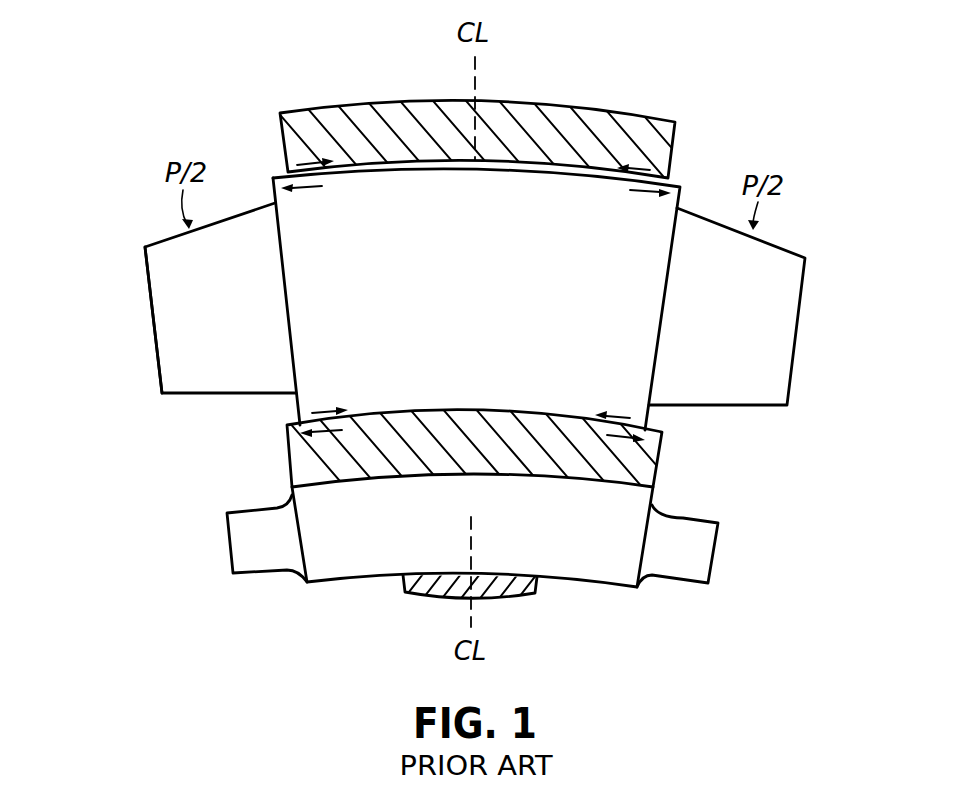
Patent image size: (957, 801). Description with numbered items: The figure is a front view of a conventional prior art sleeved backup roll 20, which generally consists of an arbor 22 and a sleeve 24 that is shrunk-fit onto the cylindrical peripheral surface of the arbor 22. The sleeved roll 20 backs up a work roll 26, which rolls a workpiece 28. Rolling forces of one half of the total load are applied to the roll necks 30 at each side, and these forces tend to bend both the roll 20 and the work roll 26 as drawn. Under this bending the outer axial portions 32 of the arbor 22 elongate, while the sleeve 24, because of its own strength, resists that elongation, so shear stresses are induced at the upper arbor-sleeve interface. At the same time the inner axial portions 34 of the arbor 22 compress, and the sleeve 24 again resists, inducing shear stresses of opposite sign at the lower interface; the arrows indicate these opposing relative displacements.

The roll 20 is at (143, 266).
The arbor 22 is at (270, 180).
The sleeve 24 is at (328, 110).
The work roll 26 is at (218, 533).
The workpiece 28 is at (497, 600).
The roll necks 30 is at (153, 353).
The outer axial portions 32 is at (678, 183).
The inner axial portions 34 is at (650, 414).